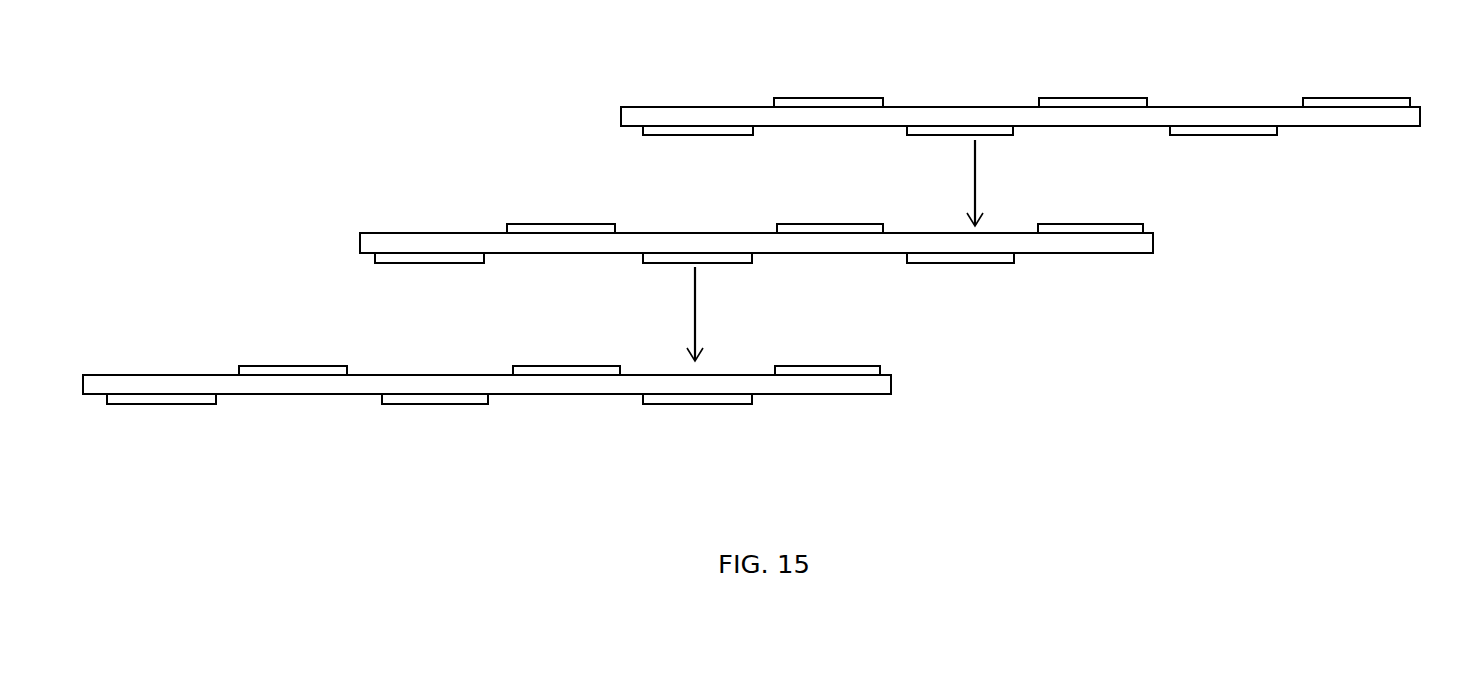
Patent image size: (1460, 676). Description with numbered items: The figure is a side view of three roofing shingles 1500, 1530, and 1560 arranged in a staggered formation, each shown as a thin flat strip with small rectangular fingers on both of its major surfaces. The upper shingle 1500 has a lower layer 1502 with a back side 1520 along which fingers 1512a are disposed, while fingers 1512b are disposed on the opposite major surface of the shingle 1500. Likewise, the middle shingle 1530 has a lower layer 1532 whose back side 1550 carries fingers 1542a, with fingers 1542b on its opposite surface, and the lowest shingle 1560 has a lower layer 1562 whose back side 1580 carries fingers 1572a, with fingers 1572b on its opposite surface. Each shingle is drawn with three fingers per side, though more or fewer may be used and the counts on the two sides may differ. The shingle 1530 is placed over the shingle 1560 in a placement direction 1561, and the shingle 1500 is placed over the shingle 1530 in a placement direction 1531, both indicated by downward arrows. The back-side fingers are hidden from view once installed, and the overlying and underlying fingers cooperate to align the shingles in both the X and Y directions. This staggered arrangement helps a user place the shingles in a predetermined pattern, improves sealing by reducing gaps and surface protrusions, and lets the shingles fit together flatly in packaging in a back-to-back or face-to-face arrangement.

The shingle 1500 is at (603, 92).
The lower layer 1502 is at (1421, 127).
The finger 1512a is at (700, 135).
The finger 1512b is at (830, 97).
The back side 1520 is at (1210, 135).
The shingle 1530 is at (363, 220).
The placement direction 1531 is at (977, 170).
The lower layer 1532 is at (1155, 243).
The finger 1542a is at (455, 263).
The finger 1542b is at (575, 223).
The back side 1550 is at (1005, 263).
The shingle 1560 is at (127, 353).
The placement direction 1561 is at (698, 302).
The lower layer 1562 is at (893, 388).
The finger 1572a is at (158, 404).
The finger 1572b is at (310, 366).
The back side 1580 is at (732, 404).